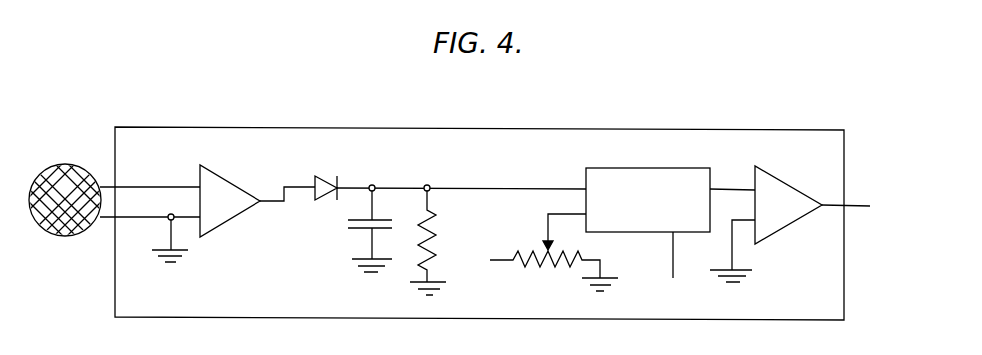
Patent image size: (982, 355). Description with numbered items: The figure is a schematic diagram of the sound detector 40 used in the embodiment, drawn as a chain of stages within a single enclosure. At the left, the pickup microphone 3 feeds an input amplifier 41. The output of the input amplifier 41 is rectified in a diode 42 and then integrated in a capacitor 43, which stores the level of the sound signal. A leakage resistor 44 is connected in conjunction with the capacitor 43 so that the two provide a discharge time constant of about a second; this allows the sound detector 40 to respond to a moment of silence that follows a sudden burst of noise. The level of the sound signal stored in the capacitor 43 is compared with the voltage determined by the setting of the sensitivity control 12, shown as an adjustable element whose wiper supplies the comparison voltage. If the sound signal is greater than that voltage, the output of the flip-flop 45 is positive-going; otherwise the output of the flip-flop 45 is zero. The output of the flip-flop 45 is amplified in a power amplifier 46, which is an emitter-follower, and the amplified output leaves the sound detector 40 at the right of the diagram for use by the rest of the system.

The pickup microphone 3 is at (65, 163).
The sound detector 40 is at (205, 127).
The input amplifier 41 is at (224, 224).
The diode 42 is at (328, 175).
The capacitor 43 is at (347, 222).
The leakage resistor 44 is at (437, 238).
The sensitivity control 12 is at (546, 242).
The flip-flop 45 is at (641, 168).
The power amplifier 46 is at (790, 188).